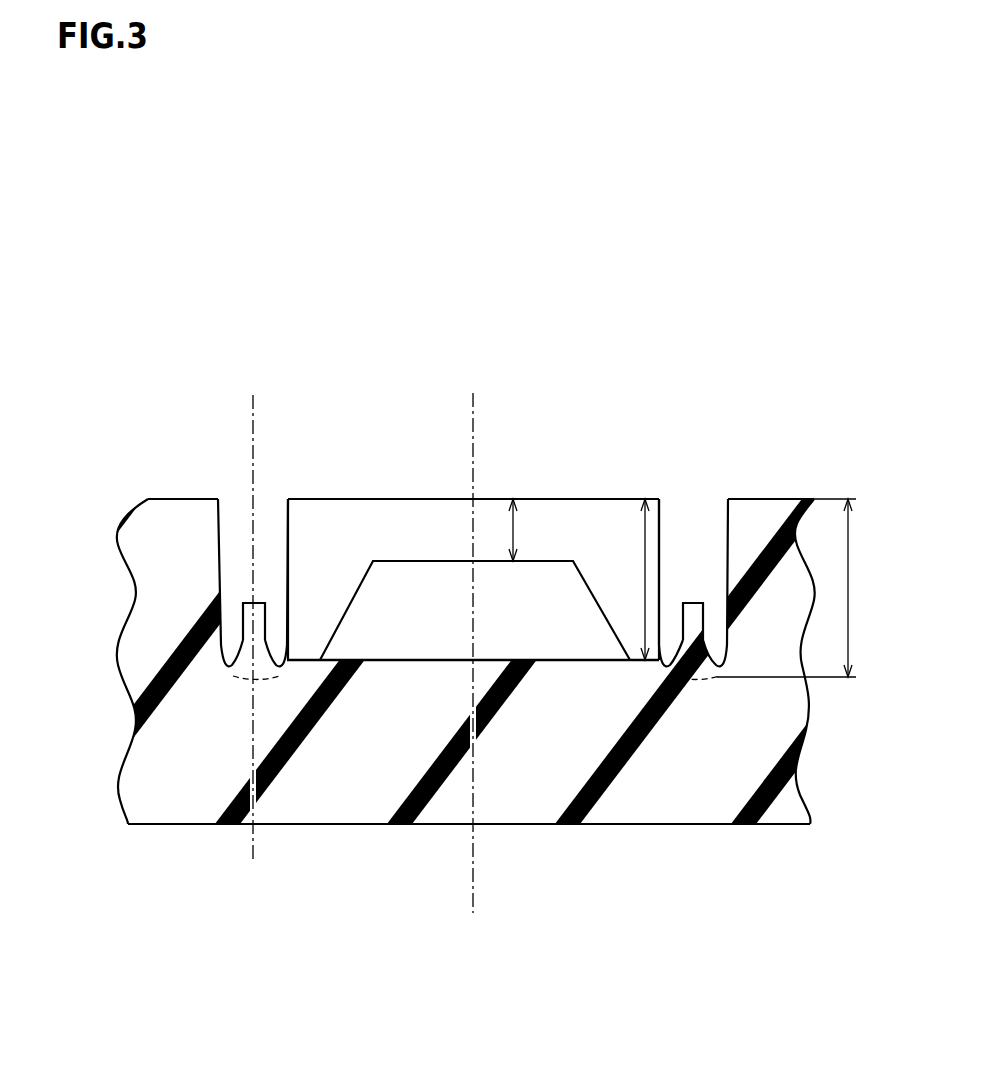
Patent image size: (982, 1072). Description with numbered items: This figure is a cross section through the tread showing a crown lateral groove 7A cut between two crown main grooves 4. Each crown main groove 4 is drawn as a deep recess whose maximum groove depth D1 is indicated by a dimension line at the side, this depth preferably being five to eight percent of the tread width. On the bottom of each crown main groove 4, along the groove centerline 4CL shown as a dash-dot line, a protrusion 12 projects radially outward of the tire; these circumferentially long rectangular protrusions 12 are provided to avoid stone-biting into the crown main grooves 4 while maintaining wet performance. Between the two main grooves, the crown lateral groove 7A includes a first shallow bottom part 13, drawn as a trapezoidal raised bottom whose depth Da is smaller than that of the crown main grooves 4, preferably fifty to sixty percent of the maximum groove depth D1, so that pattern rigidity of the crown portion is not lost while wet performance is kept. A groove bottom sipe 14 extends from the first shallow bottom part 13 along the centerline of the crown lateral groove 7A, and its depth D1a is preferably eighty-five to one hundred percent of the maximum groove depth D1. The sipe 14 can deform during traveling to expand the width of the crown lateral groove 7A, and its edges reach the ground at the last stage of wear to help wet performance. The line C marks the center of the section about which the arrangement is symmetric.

The crown main groove 4 is at (268, 513).
The protrusion 12 is at (253, 603).
The first shallow bottom part 13 is at (553, 577).
The groove bottom sipe 14 is at (378, 657).
The crown lateral groove 7A is at (420, 513).
The groove centerline 4CL is at (251, 613).
The center axis C is at (473, 638).
The depth of first shallow bottom part Da is at (515, 527).
The depth of groove bottom sipe D1a is at (645, 577).
The maximum groove depth D1 is at (790, 588).